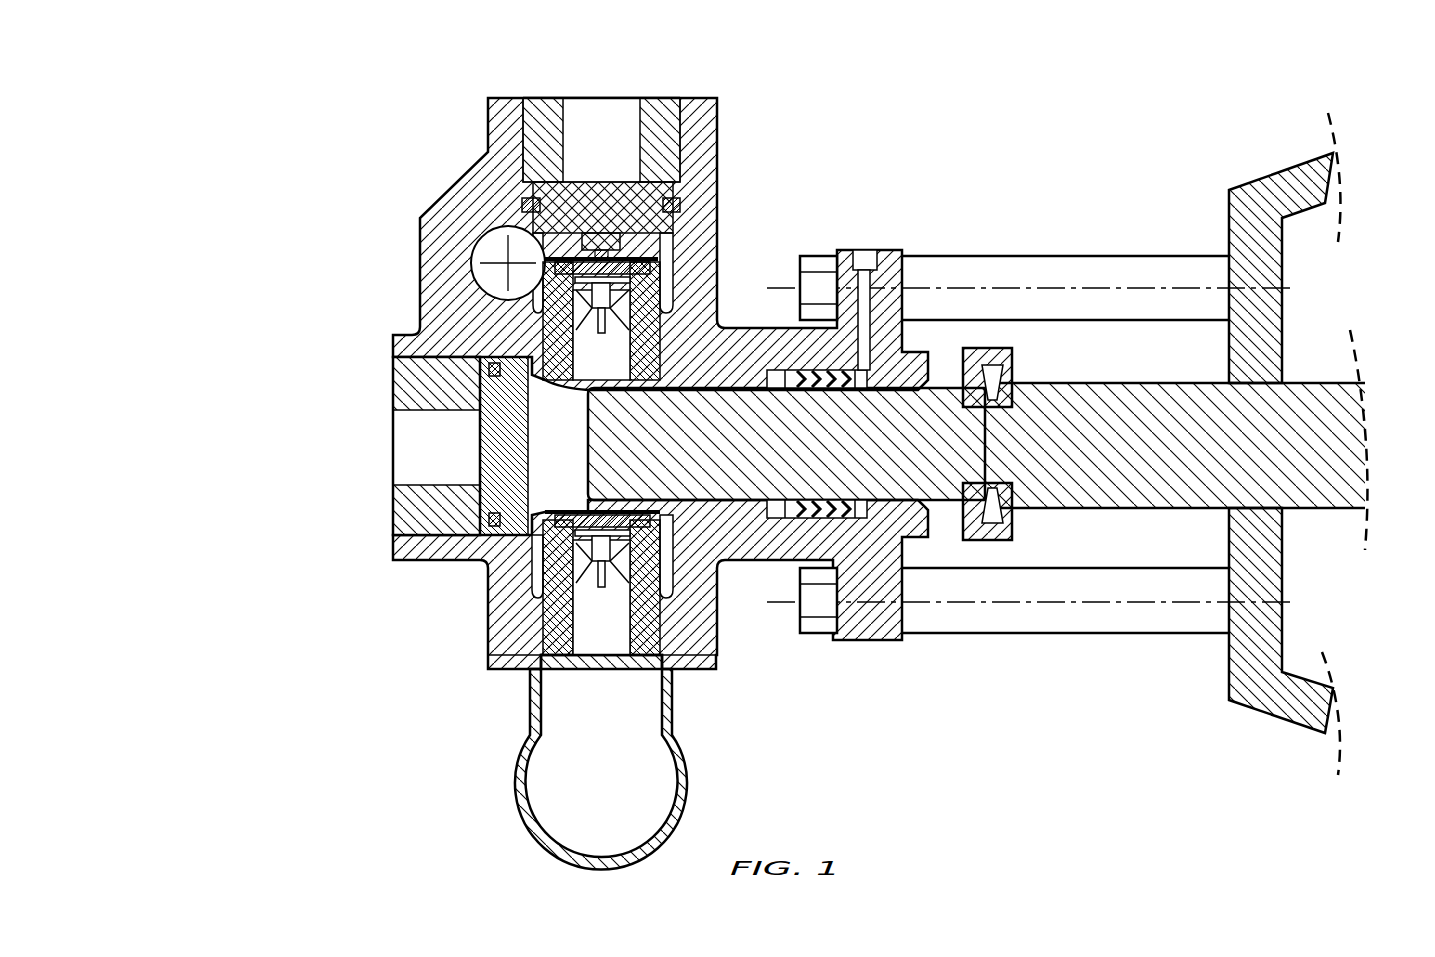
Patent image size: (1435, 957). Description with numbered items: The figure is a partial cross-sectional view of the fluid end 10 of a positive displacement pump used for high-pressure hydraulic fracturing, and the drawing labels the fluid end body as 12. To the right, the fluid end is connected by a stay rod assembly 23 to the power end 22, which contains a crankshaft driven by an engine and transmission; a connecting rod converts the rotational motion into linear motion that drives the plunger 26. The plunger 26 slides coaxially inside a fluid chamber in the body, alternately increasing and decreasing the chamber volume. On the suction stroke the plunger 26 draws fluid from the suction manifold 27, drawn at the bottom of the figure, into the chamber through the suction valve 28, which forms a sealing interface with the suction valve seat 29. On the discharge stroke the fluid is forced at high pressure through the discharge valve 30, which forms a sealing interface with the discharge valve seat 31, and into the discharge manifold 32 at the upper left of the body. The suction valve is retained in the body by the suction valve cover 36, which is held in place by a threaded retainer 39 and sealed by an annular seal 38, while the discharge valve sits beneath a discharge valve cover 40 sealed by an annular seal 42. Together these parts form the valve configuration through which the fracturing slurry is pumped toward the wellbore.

The fluid end 10 is at (1160, 113).
The fluid end 12 is at (232, 342).
The power end 22 is at (1285, 258).
The stay rod assembly 23 is at (1173, 256).
The plunger 26 is at (855, 457).
The suction manifold 27 is at (688, 782).
The suction valve 28 is at (577, 558).
The suction valve seat 29 is at (548, 620).
The discharge valve 30 is at (637, 255).
The discharge valve seat 31 is at (537, 343).
The discharge manifold 32 is at (472, 255).
The suction valve cover 36 is at (480, 447).
The annular seal 38 is at (490, 370).
The suction valve cover threaded retainer 39 is at (393, 516).
The discharge valve cover 40 is at (610, 180).
The annular seal 42 is at (680, 206).